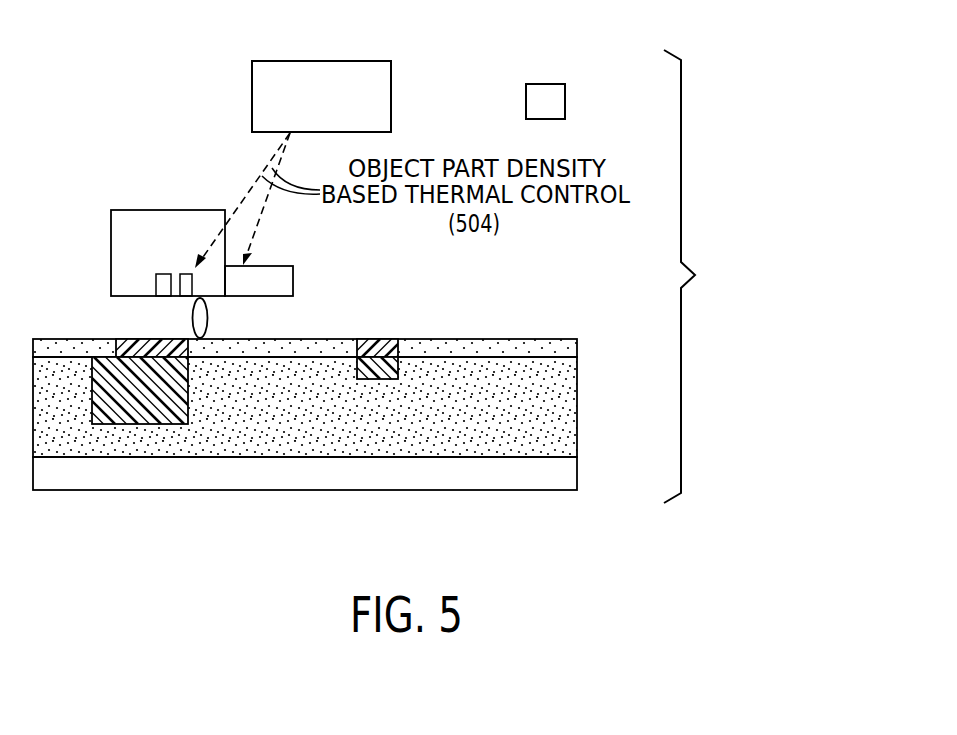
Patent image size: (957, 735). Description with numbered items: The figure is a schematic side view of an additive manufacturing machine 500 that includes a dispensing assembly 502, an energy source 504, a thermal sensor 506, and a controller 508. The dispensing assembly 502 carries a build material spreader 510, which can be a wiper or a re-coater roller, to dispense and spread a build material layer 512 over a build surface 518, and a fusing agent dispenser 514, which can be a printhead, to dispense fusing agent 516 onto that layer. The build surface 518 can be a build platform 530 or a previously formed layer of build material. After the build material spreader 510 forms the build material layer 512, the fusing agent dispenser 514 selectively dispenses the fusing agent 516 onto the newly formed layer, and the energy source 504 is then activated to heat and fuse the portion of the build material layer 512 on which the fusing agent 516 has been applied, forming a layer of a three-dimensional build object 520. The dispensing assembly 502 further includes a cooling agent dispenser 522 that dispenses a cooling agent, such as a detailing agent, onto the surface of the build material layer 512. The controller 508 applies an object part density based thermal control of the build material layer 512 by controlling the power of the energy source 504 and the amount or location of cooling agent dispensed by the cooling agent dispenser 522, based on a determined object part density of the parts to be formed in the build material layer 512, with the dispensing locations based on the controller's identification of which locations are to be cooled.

The additive manufacturing machine 500 is at (779, 276).
The dispensing assembly 502 is at (138, 210).
The energy source 504 is at (273, 276).
The thermal sensor 506 is at (547, 84).
The controller 508 is at (318, 61).
The build material spreader 510 is at (203, 317).
The build material layer 512 is at (520, 347).
The fusing agent dispenser 514 is at (163, 274).
The fusing agent 516 is at (167, 347).
The build surface 518 is at (65, 367).
The 3D build object 520 is at (108, 413).
The cooling agent dispenser 522 is at (183, 274).
The build platform 530 is at (218, 468).